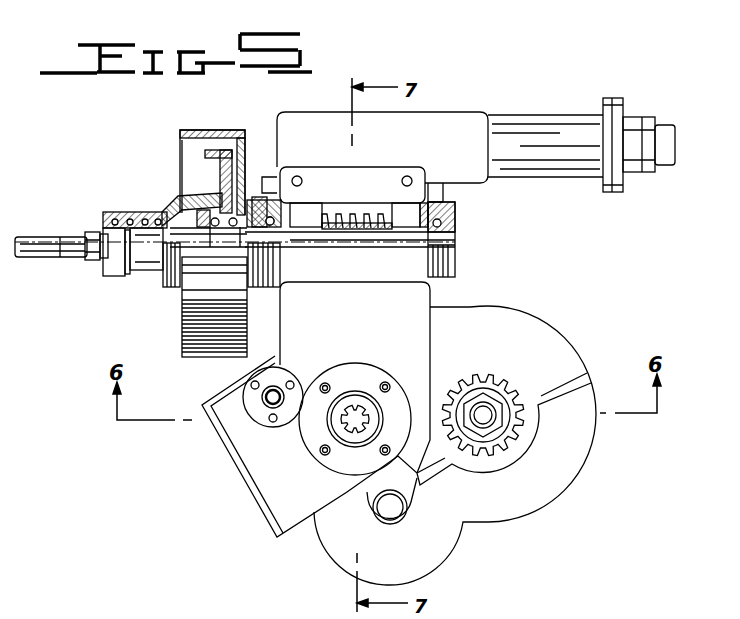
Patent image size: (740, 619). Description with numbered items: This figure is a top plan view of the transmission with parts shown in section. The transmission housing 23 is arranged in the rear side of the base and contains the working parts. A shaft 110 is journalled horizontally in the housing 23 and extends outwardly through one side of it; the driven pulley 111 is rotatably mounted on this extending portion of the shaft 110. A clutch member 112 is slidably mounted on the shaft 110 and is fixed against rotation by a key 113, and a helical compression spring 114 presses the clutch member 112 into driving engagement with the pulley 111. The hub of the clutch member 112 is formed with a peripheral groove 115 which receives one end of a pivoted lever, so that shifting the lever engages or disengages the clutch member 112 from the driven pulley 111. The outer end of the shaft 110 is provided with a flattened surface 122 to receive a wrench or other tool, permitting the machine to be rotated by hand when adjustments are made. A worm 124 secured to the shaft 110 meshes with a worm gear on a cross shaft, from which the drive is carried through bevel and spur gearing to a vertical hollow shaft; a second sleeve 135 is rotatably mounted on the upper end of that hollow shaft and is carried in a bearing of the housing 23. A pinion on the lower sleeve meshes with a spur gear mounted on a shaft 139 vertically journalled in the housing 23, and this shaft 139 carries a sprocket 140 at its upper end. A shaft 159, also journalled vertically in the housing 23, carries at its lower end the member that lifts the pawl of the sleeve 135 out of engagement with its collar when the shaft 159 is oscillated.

The flattened surface 122 is at (32, 242).
The peripheral groove 115 is at (133, 211).
The helical compression spring 114 is at (143, 214).
The clutch member 112 is at (176, 198).
The key 113 is at (192, 229).
The driven pulley 111 is at (185, 310).
The shaft 110 is at (315, 238).
The worm 124 is at (350, 214).
The transmission housing 23 is at (468, 315).
The shaft 159 is at (276, 392).
The second sleeve 135 is at (352, 395).
The sprocket 140 is at (492, 378).
The shaft 139 is at (490, 413).